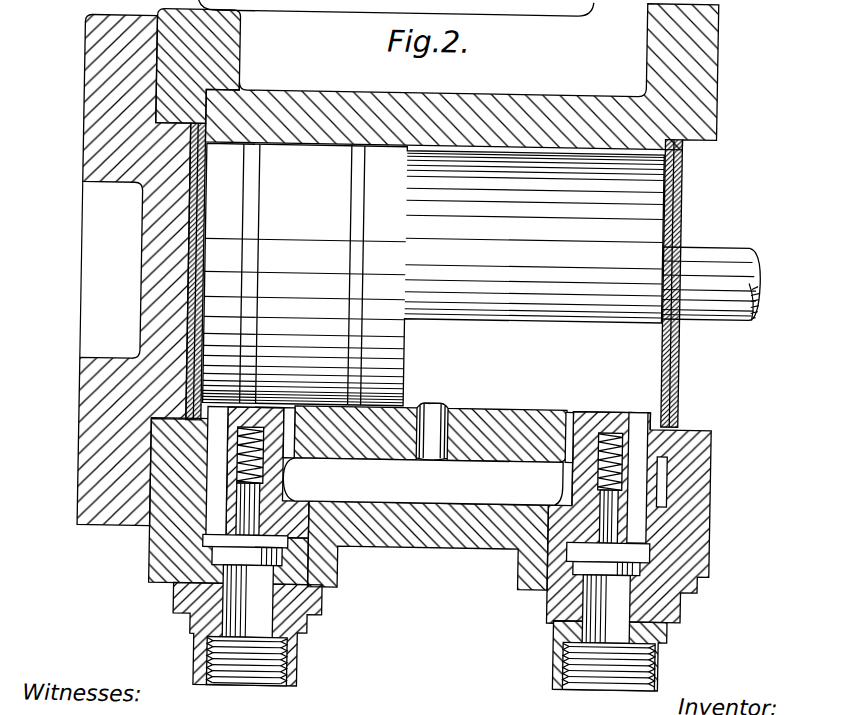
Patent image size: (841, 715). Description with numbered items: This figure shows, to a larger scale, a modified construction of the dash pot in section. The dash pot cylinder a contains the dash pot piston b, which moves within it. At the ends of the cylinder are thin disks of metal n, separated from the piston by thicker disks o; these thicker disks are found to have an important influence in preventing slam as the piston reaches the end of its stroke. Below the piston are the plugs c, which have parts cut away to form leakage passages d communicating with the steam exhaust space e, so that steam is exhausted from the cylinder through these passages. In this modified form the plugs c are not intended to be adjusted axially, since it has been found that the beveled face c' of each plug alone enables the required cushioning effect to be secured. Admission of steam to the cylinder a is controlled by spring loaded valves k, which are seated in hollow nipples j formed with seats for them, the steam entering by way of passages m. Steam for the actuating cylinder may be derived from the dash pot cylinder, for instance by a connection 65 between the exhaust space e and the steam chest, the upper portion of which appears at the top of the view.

The connection 65 is at (322, 2).
The dash pot cylinder a is at (549, 110).
The dash pot piston b is at (483, 277).
The thin disks of metal n is at (188, 240).
The thicker disks o is at (200, 276).
The plugs c is at (429, 515).
The beveled face c' is at (438, 416).
The leakage passages d is at (290, 444).
The steam exhaust space e is at (432, 448).
The passages m is at (220, 506).
The spring loaded valves k is at (245, 521).
The hollow nipples j is at (292, 629).